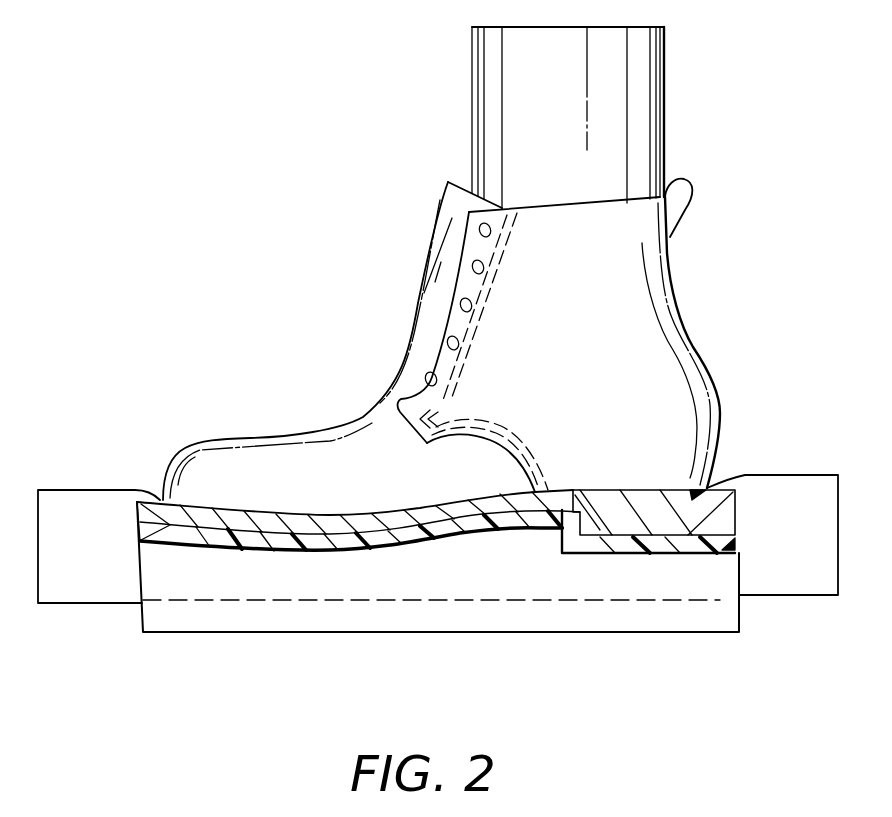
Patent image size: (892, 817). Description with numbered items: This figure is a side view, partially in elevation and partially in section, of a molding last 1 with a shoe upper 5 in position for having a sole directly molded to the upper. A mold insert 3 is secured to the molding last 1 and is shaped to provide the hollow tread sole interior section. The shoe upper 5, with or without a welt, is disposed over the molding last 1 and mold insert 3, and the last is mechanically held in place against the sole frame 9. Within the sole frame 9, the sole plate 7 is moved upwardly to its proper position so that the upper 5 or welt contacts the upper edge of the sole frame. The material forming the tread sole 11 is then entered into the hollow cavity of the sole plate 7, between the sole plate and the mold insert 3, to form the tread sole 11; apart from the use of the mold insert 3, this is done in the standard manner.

The molding last 1 is at (648, 117).
The shoe upper 5 is at (663, 305).
The mold insert 3 is at (673, 500).
The tread sole 11 is at (667, 545).
The sole plate 7 is at (628, 608).
The sole frame 9 is at (792, 493).